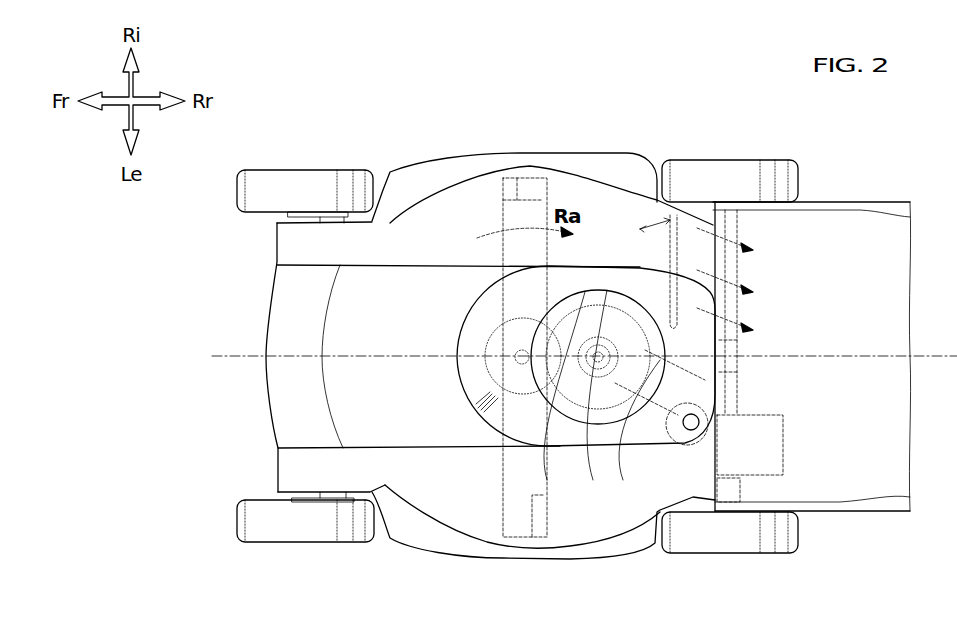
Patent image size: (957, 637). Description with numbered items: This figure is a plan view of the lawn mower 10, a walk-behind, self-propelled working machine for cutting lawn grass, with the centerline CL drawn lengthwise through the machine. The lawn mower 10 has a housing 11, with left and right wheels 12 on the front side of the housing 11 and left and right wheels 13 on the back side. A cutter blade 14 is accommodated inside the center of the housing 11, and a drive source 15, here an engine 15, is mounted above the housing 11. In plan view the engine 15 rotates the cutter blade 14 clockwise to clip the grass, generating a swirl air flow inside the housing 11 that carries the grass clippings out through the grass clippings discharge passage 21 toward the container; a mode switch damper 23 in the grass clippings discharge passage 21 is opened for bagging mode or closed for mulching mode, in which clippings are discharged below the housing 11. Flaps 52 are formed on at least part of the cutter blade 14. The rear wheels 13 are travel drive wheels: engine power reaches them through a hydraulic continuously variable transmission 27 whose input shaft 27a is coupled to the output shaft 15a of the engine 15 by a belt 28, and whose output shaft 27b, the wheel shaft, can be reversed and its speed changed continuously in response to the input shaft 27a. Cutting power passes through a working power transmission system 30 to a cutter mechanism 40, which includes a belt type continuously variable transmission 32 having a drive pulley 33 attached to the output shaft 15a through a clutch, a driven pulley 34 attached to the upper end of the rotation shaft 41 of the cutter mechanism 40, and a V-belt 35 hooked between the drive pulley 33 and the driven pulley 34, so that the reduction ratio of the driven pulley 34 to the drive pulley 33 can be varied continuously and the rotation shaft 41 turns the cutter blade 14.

The lawn mower 10 is at (365, 87).
The housing 11 is at (288, 396).
The left and right wheels 12 is at (250, 190).
The left and right wheels 13 is at (727, 178).
The cutter blade 14 is at (520, 165).
The drive source 15 is at (607, 290).
The output shaft 15a is at (585, 292).
The grass clippings discharge passage 21 is at (737, 349).
The mode switch damper 23 is at (677, 250).
The transmission 27 is at (785, 440).
The input shaft 27a is at (722, 406).
The output shaft 27b is at (740, 488).
The belt 28 is at (738, 374).
The working power transmission system 30 is at (490, 326).
The belt type continuously variable transmission 32 is at (672, 604).
The drive pulley 33 is at (623, 480).
The driven pulley 34 is at (547, 480).
The V-belt 35 is at (593, 480).
The cutter mechanism 40 is at (495, 410).
The rotation shaft 41 is at (500, 378).
The flaps 52 is at (540, 188).
The center line CL is at (226, 356).